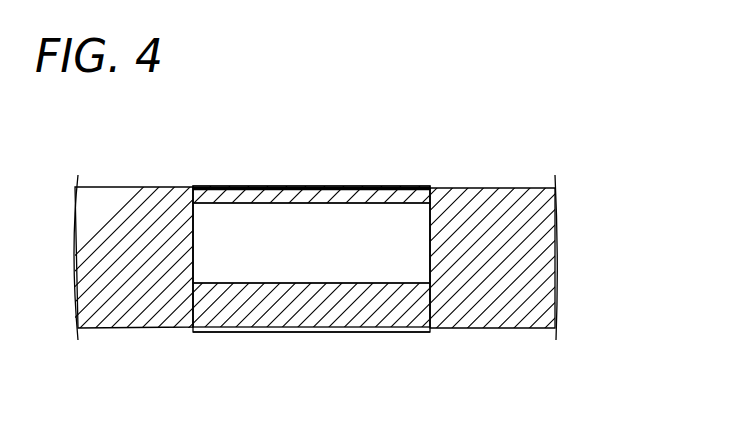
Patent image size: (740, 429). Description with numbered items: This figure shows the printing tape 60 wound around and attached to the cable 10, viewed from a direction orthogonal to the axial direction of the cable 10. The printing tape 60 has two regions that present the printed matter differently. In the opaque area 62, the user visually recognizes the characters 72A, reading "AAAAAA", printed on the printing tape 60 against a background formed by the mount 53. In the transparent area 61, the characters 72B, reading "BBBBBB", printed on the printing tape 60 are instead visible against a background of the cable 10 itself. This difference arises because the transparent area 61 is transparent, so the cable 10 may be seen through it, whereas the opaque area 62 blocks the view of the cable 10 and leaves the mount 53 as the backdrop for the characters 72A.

The cable 10 is at (511, 290).
The mount 53 is at (371, 218).
The printing tape 60 is at (428, 183).
The transparent area 61 is at (390, 327).
The opaque area 62 is at (232, 224).
The characters 72A is at (322, 240).
The characters 72B is at (310, 330).